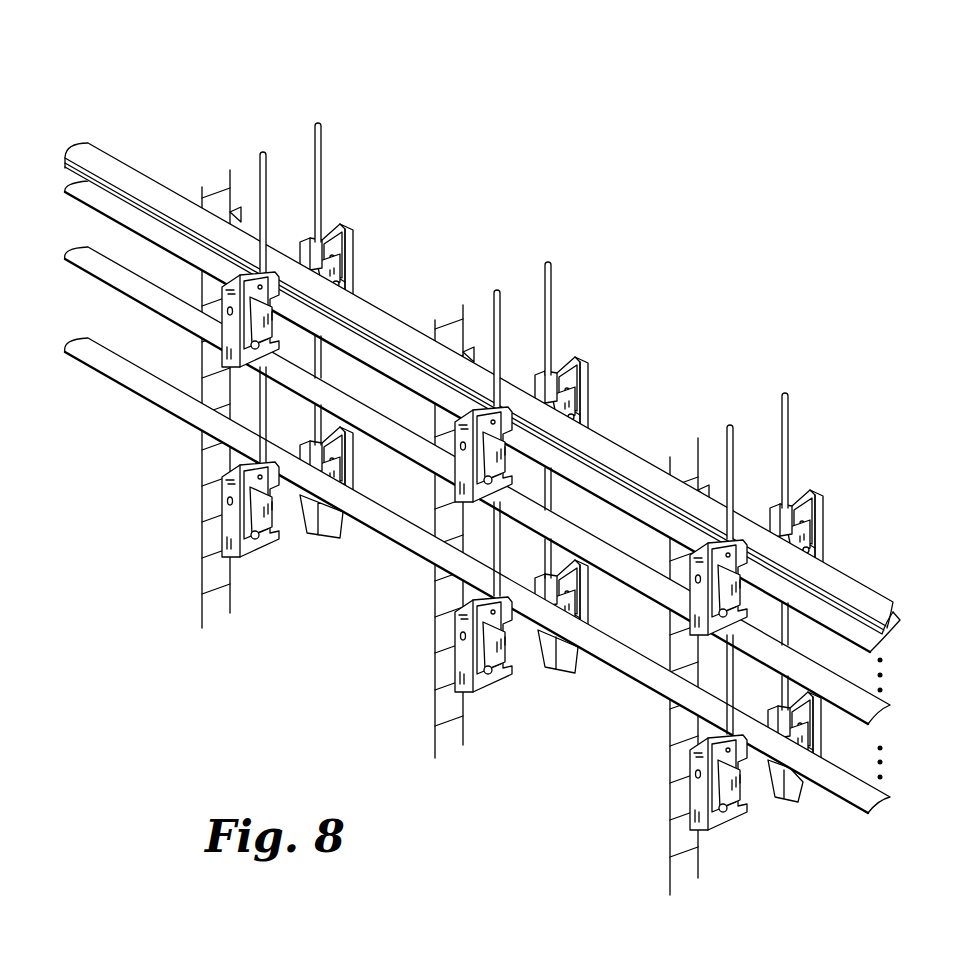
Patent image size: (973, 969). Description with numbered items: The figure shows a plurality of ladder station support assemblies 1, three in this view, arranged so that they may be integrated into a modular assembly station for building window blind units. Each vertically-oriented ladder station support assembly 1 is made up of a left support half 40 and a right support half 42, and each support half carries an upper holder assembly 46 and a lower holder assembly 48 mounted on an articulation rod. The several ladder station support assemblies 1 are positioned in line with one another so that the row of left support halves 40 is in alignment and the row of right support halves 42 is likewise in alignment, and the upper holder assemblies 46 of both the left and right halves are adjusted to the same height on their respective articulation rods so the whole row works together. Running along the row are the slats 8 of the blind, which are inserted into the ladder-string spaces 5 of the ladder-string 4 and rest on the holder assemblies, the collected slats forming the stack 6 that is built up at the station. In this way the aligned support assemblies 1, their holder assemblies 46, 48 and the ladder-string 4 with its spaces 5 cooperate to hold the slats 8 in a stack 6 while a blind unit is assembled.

The ladder station support assembly 1 is at (532, 505).
The ladder-string 4 is at (203, 572).
The ladder-string spaces 5 is at (210, 539).
The stack 6 is at (888, 603).
The slat 8 is at (888, 645).
The left support half 40 is at (202, 130).
The right support half 42 is at (350, 98).
The upper holder assembly 46 is at (595, 407).
The lower holder assembly 48 is at (806, 796).